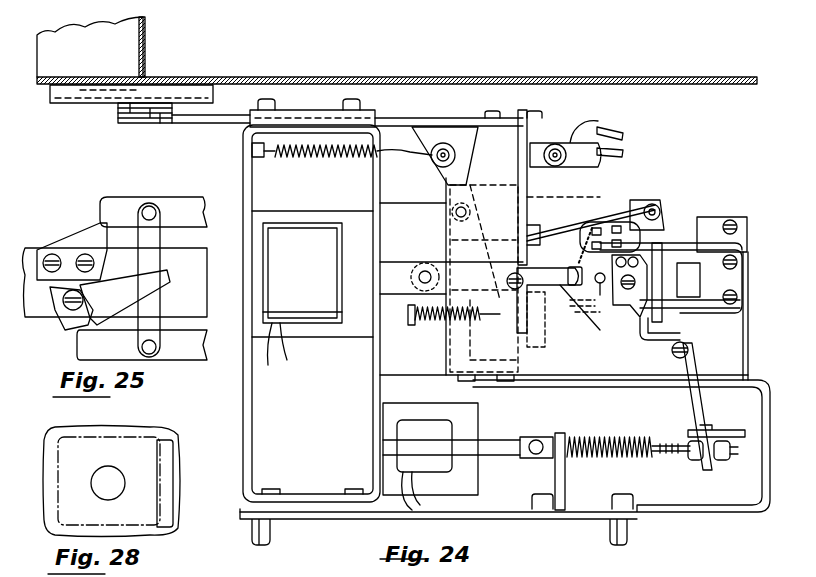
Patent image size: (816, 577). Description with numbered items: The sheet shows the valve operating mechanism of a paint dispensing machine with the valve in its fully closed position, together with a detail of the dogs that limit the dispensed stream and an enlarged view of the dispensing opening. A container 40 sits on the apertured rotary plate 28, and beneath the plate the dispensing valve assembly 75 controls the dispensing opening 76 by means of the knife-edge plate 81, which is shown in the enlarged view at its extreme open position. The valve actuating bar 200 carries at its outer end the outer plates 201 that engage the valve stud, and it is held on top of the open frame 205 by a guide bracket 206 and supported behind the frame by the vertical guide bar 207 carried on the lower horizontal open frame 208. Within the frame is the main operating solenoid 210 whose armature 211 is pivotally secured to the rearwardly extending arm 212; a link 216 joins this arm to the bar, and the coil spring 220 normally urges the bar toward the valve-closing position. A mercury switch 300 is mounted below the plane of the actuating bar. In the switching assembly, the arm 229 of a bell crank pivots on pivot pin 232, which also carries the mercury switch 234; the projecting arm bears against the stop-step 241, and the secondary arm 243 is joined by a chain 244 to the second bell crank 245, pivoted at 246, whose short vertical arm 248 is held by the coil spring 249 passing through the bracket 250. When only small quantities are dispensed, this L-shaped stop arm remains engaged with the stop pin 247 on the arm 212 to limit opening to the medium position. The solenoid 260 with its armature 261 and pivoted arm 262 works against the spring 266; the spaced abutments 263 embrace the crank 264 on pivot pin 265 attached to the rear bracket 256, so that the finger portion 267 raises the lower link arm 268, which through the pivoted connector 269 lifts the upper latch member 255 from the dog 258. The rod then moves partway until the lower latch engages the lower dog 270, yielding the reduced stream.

In FIG. 24, the rotary plate 28 is at (362, 77).
In FIG. 28, the rotary plate 28 is at (46, 437).
In FIG. 24, the container 40 is at (148, 60).
In FIG. 24, the dispensing valve assembly 75 is at (76, 103).
In FIG. 24, the outer plates 201 is at (150, 123).
In FIG. 24, the valve actuating bar 200 is at (213, 123).
In FIG. 24, the guide bracket 206 is at (400, 112).
In FIG. 24, the vertical guide bar 207 is at (527, 120).
In FIG. 24, the mercury switch 300 is at (588, 135).
In FIG. 24, the open frame 205 is at (400, 205).
In FIG. 24, the coil spring 220 is at (332, 160).
In FIG. 24, the link 216 is at (468, 150).
In FIG. 24, the armature 211 is at (394, 262).
In FIG. 24, the arm 212 is at (530, 265).
In FIG. 25, the arm 212 is at (40, 247).
In FIG. 24, the arm of bell crank 229 is at (535, 226).
In FIG. 24, the secondary arm 243 is at (572, 226).
In FIG. 24, the chain 244 is at (585, 236).
In FIG. 24, the mercury switch 234 is at (636, 203).
In FIG. 24, the pivot pin 232 is at (662, 220).
In FIG. 24, the rear bracket 256 is at (748, 214).
In FIG. 24, the stop-step 241 is at (568, 262).
In FIG. 24, the pivoted connector 269 is at (690, 282).
In FIG. 25, the pivoted connector 269 is at (160, 242).
In FIG. 24, the crank 264 is at (715, 365).
In FIG. 24, the lower link arm 268 is at (700, 316).
In FIG. 25, the lower link arm 268 is at (68, 325).
In FIG. 24, the finger portion 267 is at (635, 342).
In FIG. 24, the pivot pin 265 is at (679, 378).
In FIG. 24, the second bell crank 245 is at (580, 300).
In FIG. 24, the stop pin 247 is at (597, 305).
In FIG. 24, the pivot 246 is at (528, 312).
In FIG. 24, the bracket 250 is at (436, 326).
In FIG. 24, the coil spring 249 is at (410, 360).
In FIG. 24, the short vertical arm 248 is at (490, 382).
In FIG. 24, the lower horizontal open frame 208 is at (612, 381).
In FIG. 24, the solenoid 260 is at (458, 484).
In FIG. 24, the armature 261 is at (493, 456).
In FIG. 24, the spring 266 is at (620, 458).
In FIG. 24, the pivoted arm 262 is at (675, 462).
In FIG. 24, the spaced abutments 263 is at (725, 468).
In FIG. 24, the main operating solenoid 210 is at (338, 338).
In FIG. 25, the upper latch member 255 is at (202, 193).
In FIG. 25, the dog 258 is at (67, 250).
In FIG. 25, the lower dog 270 is at (165, 285).
In FIG. 28, the dispensing opening 76 is at (100, 481).
In FIG. 28, the knife-edge plate 81 is at (170, 490).